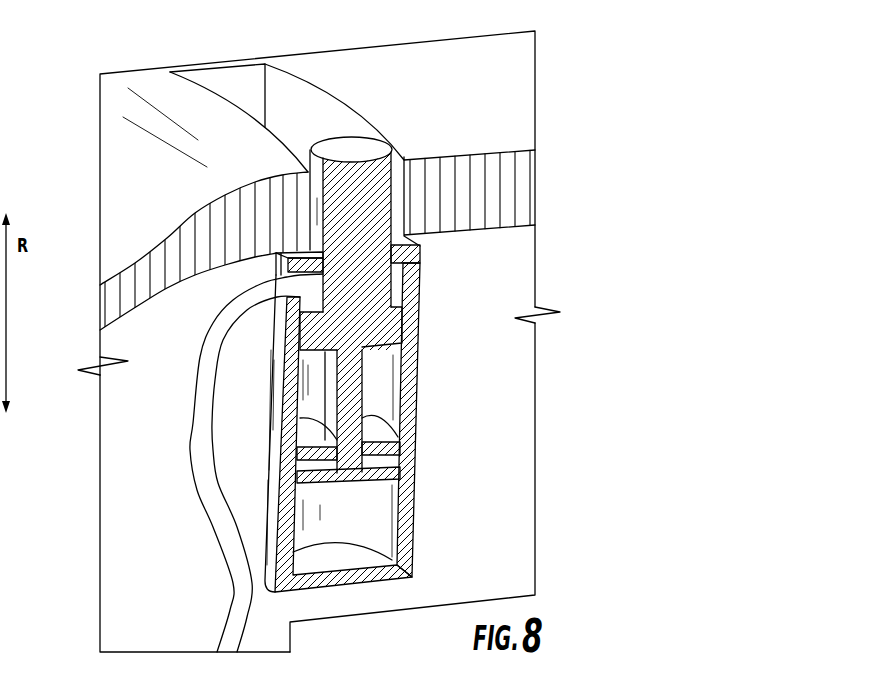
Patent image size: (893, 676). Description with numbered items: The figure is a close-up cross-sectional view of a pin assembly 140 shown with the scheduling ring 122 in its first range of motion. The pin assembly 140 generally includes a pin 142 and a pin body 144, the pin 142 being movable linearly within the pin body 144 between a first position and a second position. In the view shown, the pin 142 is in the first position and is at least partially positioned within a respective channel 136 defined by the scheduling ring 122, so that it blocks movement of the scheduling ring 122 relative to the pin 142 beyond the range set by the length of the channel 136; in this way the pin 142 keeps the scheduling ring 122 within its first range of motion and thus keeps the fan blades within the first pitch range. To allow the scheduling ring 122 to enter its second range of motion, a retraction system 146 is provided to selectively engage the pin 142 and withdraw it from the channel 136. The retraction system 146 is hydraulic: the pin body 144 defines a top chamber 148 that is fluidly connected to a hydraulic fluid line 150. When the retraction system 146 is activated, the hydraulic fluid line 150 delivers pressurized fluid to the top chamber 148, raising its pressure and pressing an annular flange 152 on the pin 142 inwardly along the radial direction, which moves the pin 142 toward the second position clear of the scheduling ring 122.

The scheduling ring 122 is at (510, 93).
The channel 136 is at (313, 110).
The pin assembly 140 is at (450, 364).
The pin 142 is at (366, 218).
The pin body 144 is at (407, 408).
The retraction system 146 is at (148, 430).
The top chamber 148 is at (398, 272).
The hydraulic fluid line 150 is at (210, 490).
The annular flange 152 is at (387, 328).